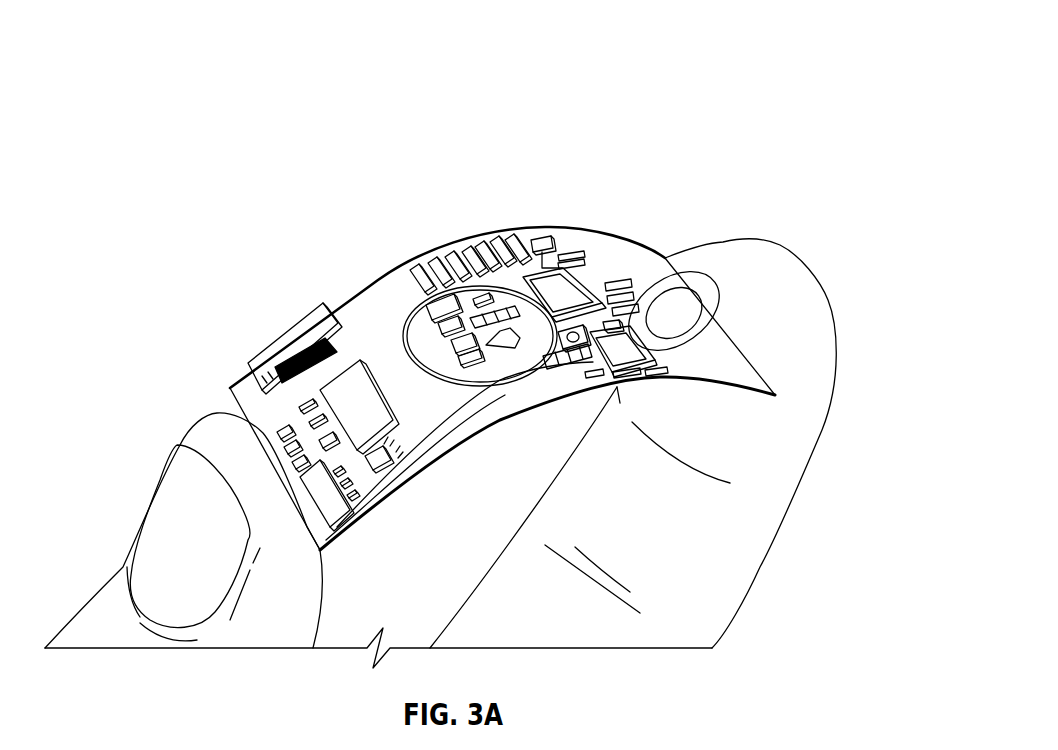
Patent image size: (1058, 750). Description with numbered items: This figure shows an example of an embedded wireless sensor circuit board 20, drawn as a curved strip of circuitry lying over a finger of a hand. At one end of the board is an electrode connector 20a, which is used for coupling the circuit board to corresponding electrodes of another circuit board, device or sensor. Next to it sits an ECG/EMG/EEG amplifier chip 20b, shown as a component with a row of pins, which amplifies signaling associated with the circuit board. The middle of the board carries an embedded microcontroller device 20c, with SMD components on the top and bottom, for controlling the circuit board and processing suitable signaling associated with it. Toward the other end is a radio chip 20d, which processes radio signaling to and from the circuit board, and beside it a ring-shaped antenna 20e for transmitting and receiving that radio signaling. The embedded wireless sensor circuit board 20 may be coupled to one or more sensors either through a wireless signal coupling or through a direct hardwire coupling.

The embedded wireless sensor circuit board 20 is at (307, 268).
The electrode connector 20a is at (257, 433).
The amplifier chip 20b is at (313, 337).
The embedded microcontroller device 20c is at (440, 252).
The radio chip 20d is at (622, 80).
The antenna 20e is at (770, 140).